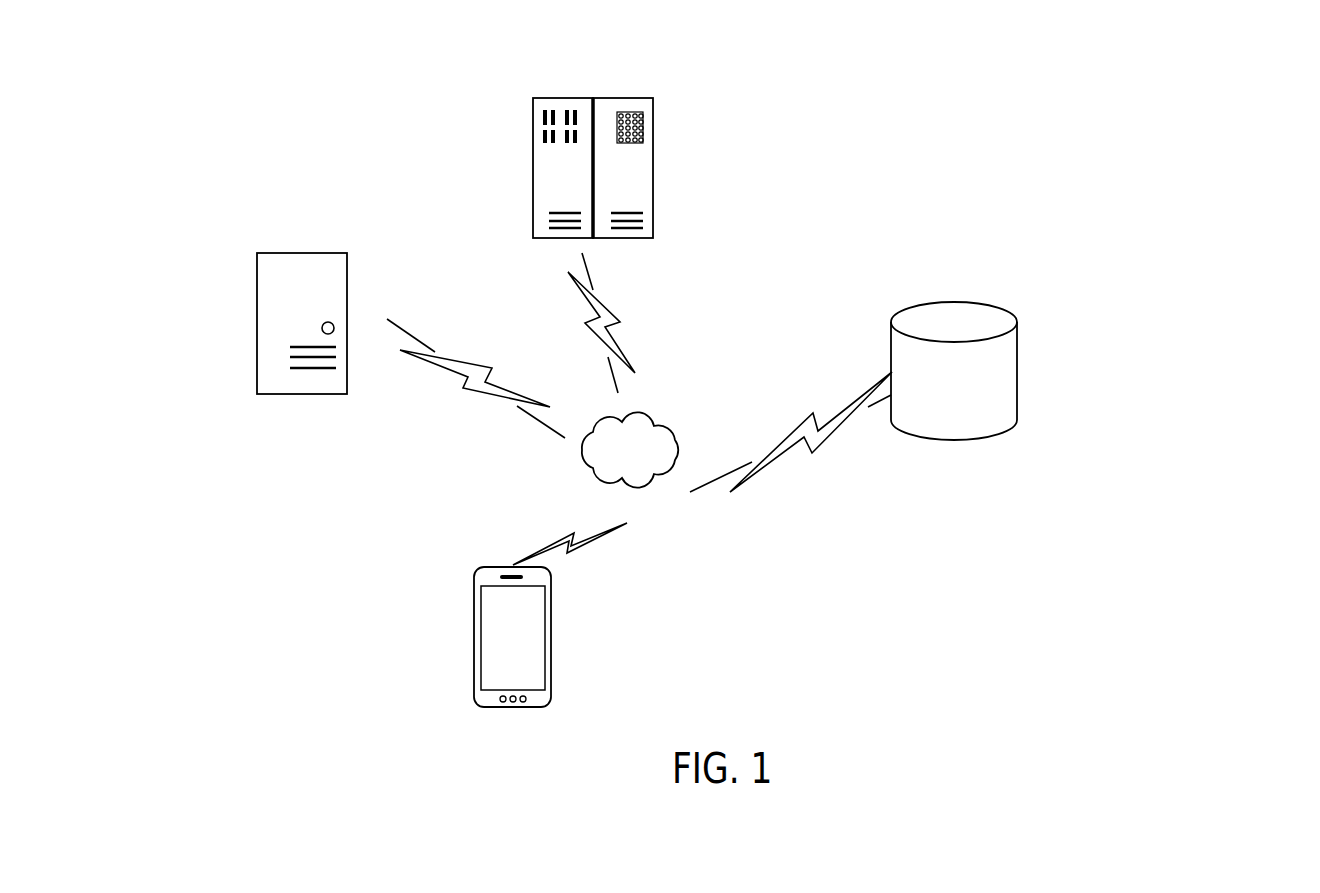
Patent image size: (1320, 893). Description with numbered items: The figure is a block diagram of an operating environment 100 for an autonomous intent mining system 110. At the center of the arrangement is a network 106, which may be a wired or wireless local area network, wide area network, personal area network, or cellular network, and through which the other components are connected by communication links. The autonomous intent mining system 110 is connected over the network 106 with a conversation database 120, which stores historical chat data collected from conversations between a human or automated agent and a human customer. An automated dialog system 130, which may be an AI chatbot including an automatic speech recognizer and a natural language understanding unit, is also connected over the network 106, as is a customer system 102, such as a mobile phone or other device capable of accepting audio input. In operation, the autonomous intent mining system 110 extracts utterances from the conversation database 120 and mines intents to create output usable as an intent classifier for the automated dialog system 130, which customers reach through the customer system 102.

The operating environment 100 is at (412, 113).
The customer system 102 is at (553, 620).
The network 106 is at (572, 457).
The autonomous intent mining system 110 is at (257, 288).
The conversation database 120 is at (1016, 365).
The automated dialog system 130 is at (655, 165).